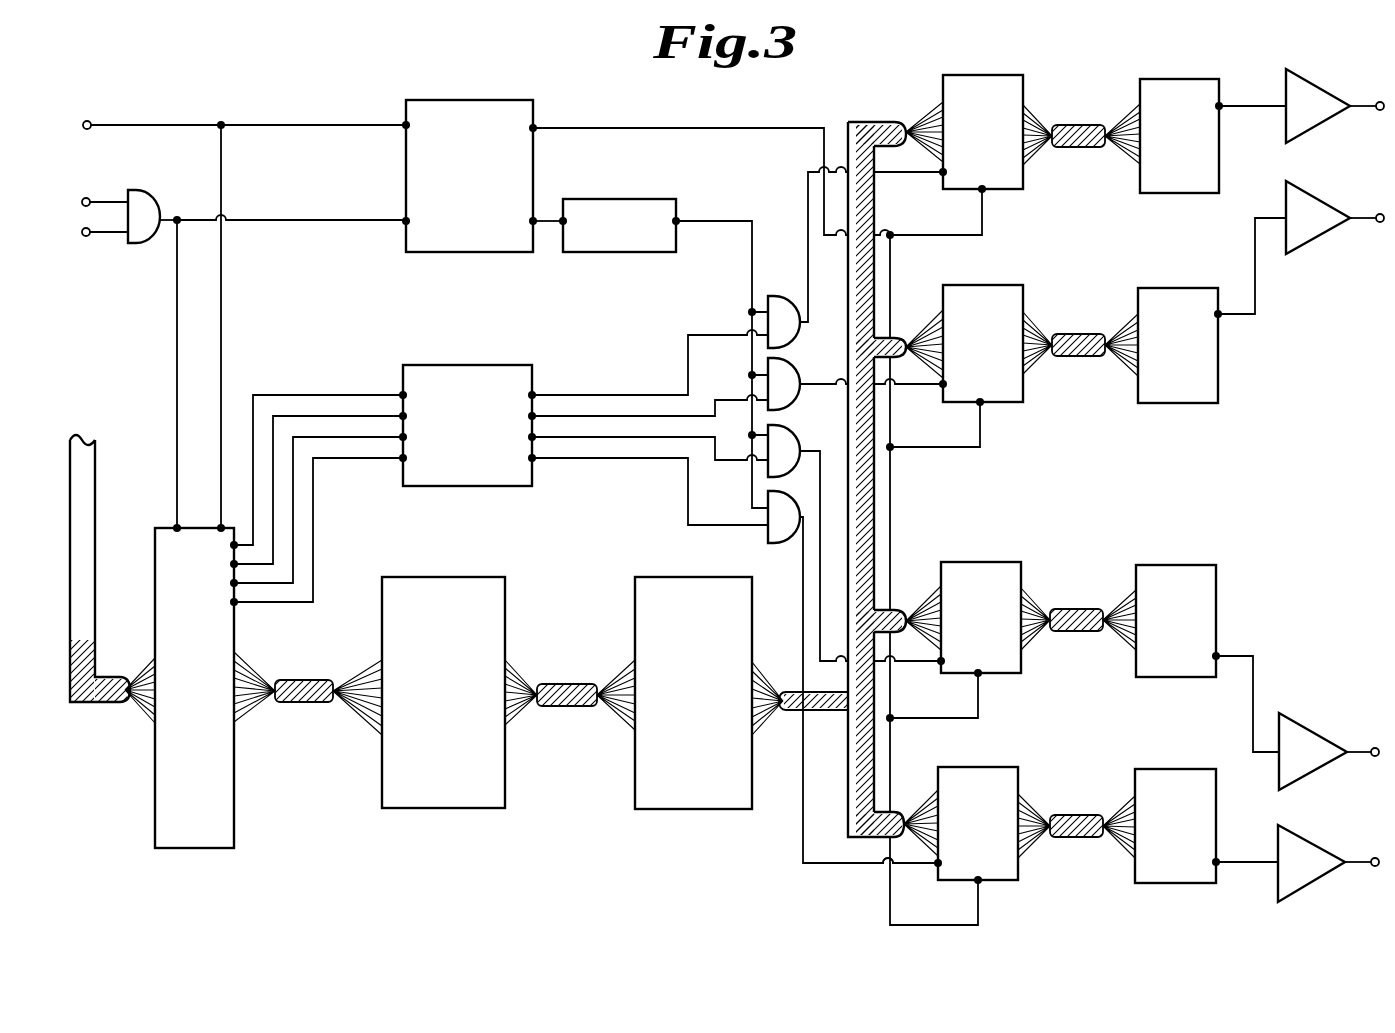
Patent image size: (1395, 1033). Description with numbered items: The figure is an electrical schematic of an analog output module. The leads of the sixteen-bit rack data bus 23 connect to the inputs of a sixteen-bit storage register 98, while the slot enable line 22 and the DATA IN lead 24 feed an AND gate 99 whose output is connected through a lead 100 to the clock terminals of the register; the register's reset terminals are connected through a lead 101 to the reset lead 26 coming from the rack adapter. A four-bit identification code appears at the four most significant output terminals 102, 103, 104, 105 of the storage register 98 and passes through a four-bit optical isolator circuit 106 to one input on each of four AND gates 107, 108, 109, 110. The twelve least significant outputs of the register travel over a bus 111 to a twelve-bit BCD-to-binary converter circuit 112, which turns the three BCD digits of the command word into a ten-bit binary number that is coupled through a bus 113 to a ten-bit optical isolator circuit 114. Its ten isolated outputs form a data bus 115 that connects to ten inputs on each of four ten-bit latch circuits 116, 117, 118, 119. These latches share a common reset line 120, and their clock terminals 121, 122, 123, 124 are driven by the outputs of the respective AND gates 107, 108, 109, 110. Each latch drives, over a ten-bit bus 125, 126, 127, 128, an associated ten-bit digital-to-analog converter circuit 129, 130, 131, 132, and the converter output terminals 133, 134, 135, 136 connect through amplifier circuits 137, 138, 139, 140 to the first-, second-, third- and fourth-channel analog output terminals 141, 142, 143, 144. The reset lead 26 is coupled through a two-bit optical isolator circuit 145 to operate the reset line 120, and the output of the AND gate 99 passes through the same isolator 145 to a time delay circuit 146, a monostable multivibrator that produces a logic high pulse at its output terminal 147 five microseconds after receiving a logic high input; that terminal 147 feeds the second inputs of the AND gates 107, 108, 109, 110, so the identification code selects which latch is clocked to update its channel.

The slot enable line 22 is at (86, 236).
The rack data bus 23 is at (96, 476).
The DATA IN lead 24 is at (86, 198).
The reset lead 26 is at (87, 120).
The sixteen-bit storage register 98 is at (239, 832).
The AND gate 99 is at (168, 178).
The lead 100 is at (177, 340).
The lead 101 is at (221, 318).
The output terminal 102 is at (234, 543).
The output terminal 103 is at (238, 563).
The output terminal 104 is at (238, 584).
The output terminal 105 is at (238, 603).
The four-bit optical isolator circuit 106 is at (400, 360).
The AND gate 107 is at (792, 296).
The AND gate 108 is at (790, 359).
The AND gate 109 is at (790, 426).
The AND gate 110 is at (786, 544).
The bus 111 is at (300, 680).
The twelve-bit BCD-to-binary converter circuit 112 is at (412, 812).
The bus 113 is at (582, 683).
The ten-bit optical isolator circuit 114 is at (672, 811).
The data bus 115 is at (843, 815).
The ten-bit latch circuit 116 is at (1003, 75).
The ten-bit latch circuit 117 is at (1000, 285).
The ten-bit latch circuit 118 is at (965, 562).
The ten-bit latch circuit 119 is at (990, 767).
The reset line 120 is at (645, 128).
The clock terminal 121 is at (943, 176).
The clock terminal 122 is at (943, 388).
The clock terminal 123 is at (941, 665).
The clock terminal 124 is at (938, 867).
The ten-bit bus 125 is at (1096, 126).
The ten-bit bus 126 is at (1096, 334).
The ten-bit bus 127 is at (1096, 609).
The ten-bit bus 128 is at (1094, 815).
The ten-bit digital-to-analog converter circuit 129 is at (1200, 79).
The ten-bit digital-to-analog converter circuit 130 is at (1160, 288).
The ten-bit digital-to-analog converter circuit 131 is at (1195, 565).
The ten-bit digital-to-analog converter circuit 132 is at (1155, 769).
The output terminal 133 is at (1222, 109).
The output terminal 134 is at (1222, 318).
The output terminal 135 is at (1220, 655).
The output terminal 136 is at (1219, 860).
The amplifier circuit 137 is at (1318, 88).
The amplifier circuit 138 is at (1318, 204).
The amplifier circuit 139 is at (1316, 732).
The amplifier circuit 140 is at (1312, 845).
The first-channel analog output terminal 141 is at (1382, 102).
The second-channel analog output terminal 142 is at (1385, 203).
The third-channel analog output terminal 143 is at (1377, 748).
The fourth-channel analog output terminal 144 is at (1382, 851).
The two-bit optical isolator circuit 145 is at (487, 98).
The time delay circuit 146 is at (636, 199).
The output terminal 147 is at (680, 221).